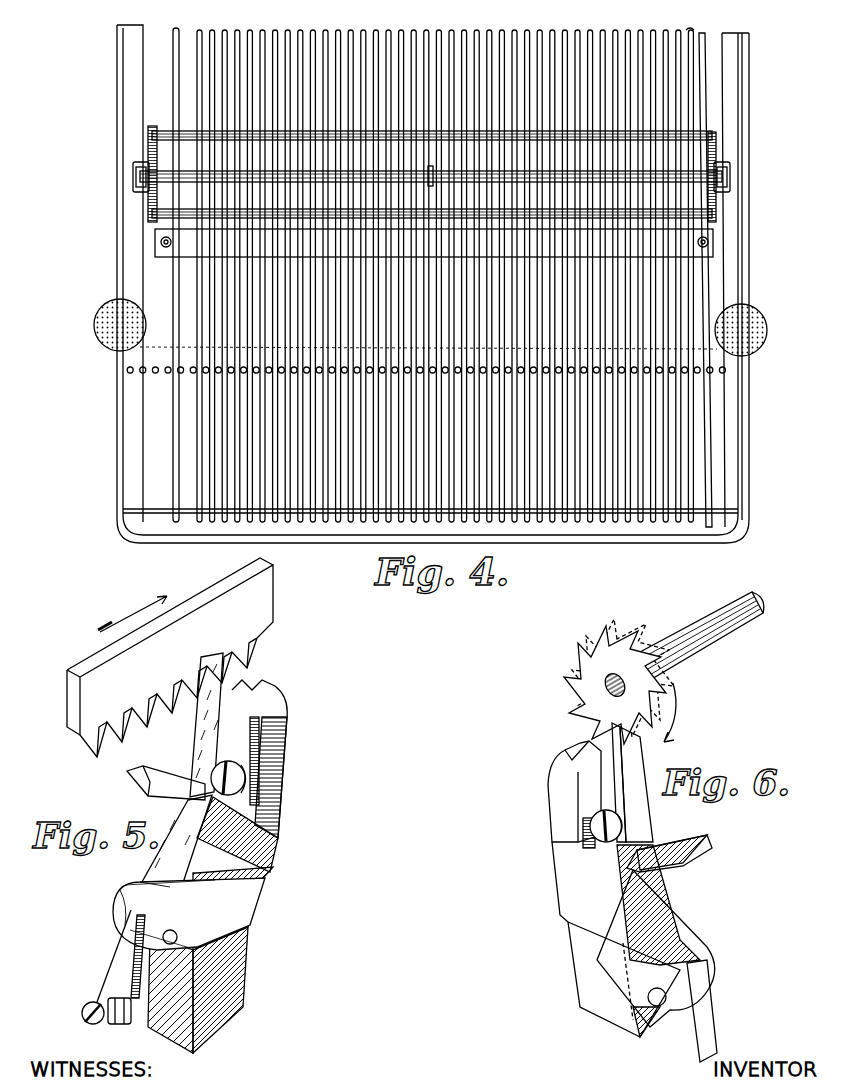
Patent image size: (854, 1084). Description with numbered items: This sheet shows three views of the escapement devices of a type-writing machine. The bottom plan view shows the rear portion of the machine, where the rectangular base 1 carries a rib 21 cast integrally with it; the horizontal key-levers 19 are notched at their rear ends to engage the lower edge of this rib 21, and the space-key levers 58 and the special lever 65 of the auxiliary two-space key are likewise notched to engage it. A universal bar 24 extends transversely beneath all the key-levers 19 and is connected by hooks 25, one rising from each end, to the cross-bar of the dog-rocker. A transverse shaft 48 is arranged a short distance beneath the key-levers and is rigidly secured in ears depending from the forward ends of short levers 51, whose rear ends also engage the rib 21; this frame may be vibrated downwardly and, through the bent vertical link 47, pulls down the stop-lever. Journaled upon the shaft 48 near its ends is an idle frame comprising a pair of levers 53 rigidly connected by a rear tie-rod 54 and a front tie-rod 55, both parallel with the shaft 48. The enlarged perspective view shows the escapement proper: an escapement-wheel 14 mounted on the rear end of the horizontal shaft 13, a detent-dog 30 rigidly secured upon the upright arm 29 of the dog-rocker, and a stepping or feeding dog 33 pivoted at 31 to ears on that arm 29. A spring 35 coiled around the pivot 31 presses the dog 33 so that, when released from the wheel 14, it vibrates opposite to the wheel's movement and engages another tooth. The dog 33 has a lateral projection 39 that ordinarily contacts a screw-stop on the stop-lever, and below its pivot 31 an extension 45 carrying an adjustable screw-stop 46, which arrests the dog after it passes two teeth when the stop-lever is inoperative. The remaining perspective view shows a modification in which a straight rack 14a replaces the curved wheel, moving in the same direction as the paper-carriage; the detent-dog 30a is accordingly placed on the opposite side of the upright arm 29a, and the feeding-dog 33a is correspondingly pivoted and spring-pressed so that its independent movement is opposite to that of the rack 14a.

In FIG. 4, the rectangular base 1 is at (117, 205).
In FIG. 4, the horizontal levers 19 is at (553, 30).
In FIG. 4, the rib 21 is at (430, 500).
In FIG. 4, the universal bar 24 is at (434, 243).
In FIG. 4, the hooks 25 is at (434, 242).
In FIG. 4, the bent vertical link 47 is at (433, 175).
In FIG. 4, the transverse shaft 48 is at (431, 170).
In FIG. 4, the short levers 51 is at (138, 425).
In FIG. 4, the levers or cross-bars 53 is at (721, 126).
In FIG. 4, the rear tie-rod 54 is at (432, 202).
In FIG. 4, the front tie-rod 55 is at (710, 130).
In FIG. 4, the space-key levers 58 is at (173, 72).
In FIG. 4, the special lever 65 is at (700, 33).
In FIG. 5, the straight rack 14a is at (262, 644).
In FIG. 5, the upright arm 29a is at (243, 962).
In FIG. 5, the detent-dog 30a is at (289, 694).
In FIG. 5, the feeding-dog 33a is at (182, 775).
In FIG. 5, the spring 35 is at (114, 936).
In FIG. 6, the spring 35 is at (656, 948).
In FIG. 5, the lateral projection 39 is at (127, 777).
In FIG. 6, the lateral projection 39 is at (710, 848).
In FIG. 5, the adjustable screw-stop 46 is at (82, 1013).
In FIG. 6, the horizontal shaft 13 is at (730, 633).
In FIG. 6, the escapement-wheel 14 is at (576, 684).
In FIG. 6, the upright arm 29 is at (616, 939).
In FIG. 6, the detent-dog 30 is at (585, 794).
In FIG. 6, the pivot 31 is at (650, 990).
In FIG. 6, the stepping or feeding dog 33 is at (656, 844).
In FIG. 6, the extension 45 is at (702, 1011).